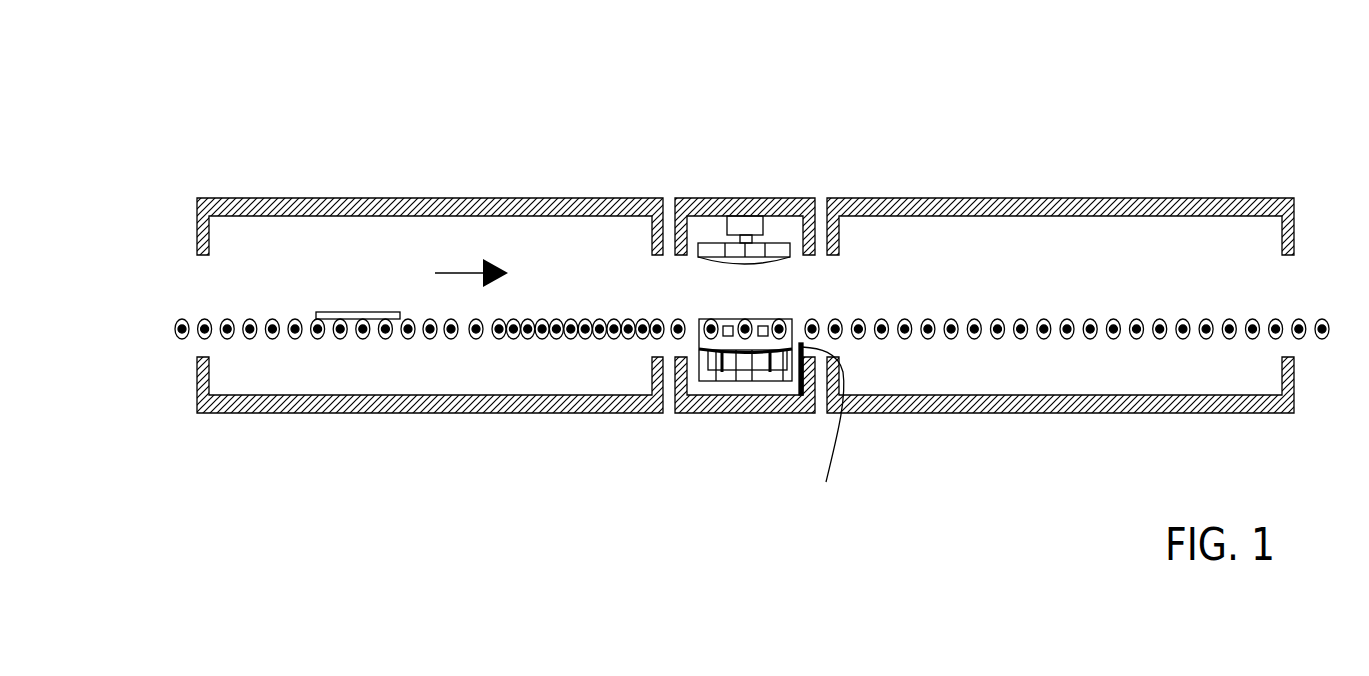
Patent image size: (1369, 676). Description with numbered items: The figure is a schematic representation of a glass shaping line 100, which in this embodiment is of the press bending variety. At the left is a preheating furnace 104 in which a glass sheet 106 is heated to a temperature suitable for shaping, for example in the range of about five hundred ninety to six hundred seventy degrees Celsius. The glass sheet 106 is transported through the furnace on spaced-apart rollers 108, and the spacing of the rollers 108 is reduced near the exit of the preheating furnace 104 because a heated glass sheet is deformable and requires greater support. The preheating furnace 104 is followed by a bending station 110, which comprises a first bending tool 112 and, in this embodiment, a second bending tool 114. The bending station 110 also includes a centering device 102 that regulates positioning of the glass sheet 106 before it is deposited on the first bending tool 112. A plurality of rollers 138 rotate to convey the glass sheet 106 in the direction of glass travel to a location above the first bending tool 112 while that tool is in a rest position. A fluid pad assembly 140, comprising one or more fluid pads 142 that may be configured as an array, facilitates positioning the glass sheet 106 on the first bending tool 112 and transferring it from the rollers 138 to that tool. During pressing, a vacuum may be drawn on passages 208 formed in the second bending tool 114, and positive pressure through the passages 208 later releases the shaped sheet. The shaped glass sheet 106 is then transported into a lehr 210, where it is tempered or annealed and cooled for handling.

The glass shaping line 100 is at (207, 92).
The centering device 102 is at (823, 427).
The preheating furnace 104 is at (298, 198).
The glass sheet 106 is at (357, 312).
The rollers 108 is at (428, 340).
The bending station 110 is at (688, 401).
The first bending tool 112 is at (801, 396).
The second bending tool 114 is at (744, 181).
The plurality of rollers 138 is at (728, 337).
The fluid pad assembly 140 is at (709, 383).
The fluid pads 142 is at (763, 338).
The passages 208 is at (776, 243).
The lehr 210 is at (1028, 198).